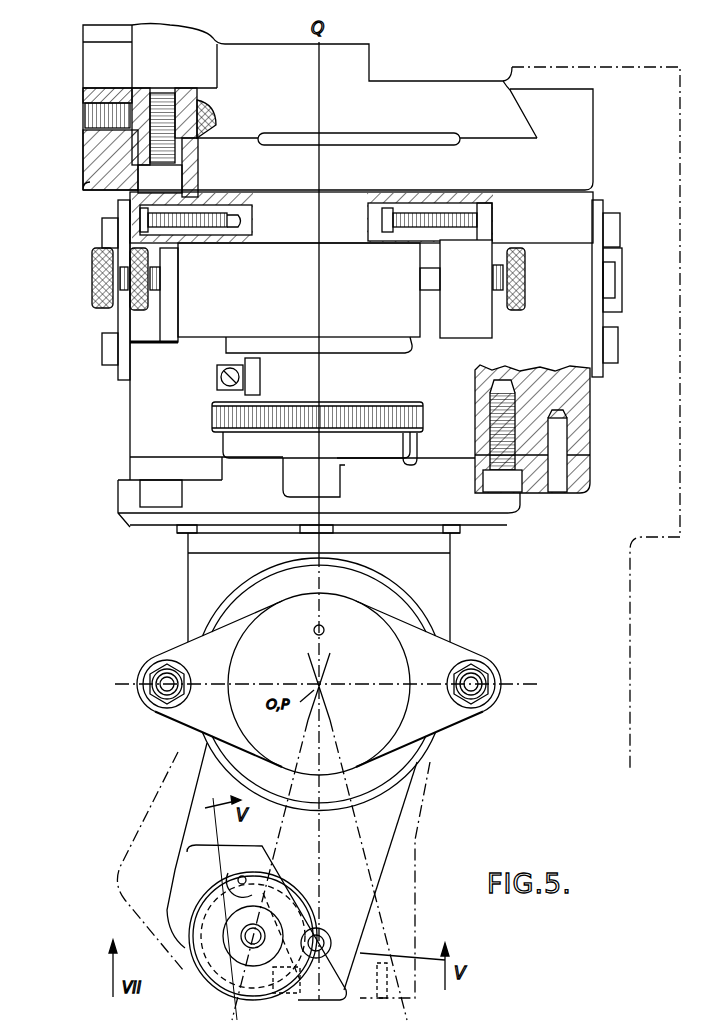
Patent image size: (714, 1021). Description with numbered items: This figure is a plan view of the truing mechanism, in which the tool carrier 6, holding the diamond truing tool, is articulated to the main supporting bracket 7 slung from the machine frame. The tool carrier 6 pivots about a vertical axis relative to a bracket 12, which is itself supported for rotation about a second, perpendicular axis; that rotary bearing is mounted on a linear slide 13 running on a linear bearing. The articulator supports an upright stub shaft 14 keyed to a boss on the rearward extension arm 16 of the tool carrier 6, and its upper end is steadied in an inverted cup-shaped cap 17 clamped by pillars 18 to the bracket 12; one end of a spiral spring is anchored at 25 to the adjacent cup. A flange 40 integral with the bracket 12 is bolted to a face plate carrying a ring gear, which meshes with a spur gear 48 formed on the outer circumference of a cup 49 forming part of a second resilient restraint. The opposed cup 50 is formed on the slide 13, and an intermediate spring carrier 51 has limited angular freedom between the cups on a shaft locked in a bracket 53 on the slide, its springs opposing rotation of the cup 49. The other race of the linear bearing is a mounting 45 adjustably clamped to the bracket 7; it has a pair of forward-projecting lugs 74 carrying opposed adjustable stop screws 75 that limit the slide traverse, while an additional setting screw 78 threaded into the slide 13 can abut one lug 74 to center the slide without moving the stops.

The tool carrier 6 is at (181, 872).
The main supporting bracket 7 is at (90, 177).
The bracket 12 is at (448, 593).
The linear slide 13 is at (299, 290).
The stub shaft 14 is at (190, 538).
The rearward extension arm 16 is at (415, 795).
The inverted cup-shaped cap 17 is at (319, 684).
The pillars 18 is at (167, 697).
The spring anchorage 25 is at (326, 631).
The flange 40 is at (205, 562).
The mounting 45 is at (420, 198).
The spur gear 48 is at (212, 413).
The cup 49 is at (230, 441).
The opposed cup 50 is at (412, 352).
The spring carrier 51 is at (383, 378).
The bracket 53 is at (292, 480).
The lugs 74 is at (143, 330).
The adjustable stop screws 75 is at (100, 295).
The setting screw 78 is at (140, 312).